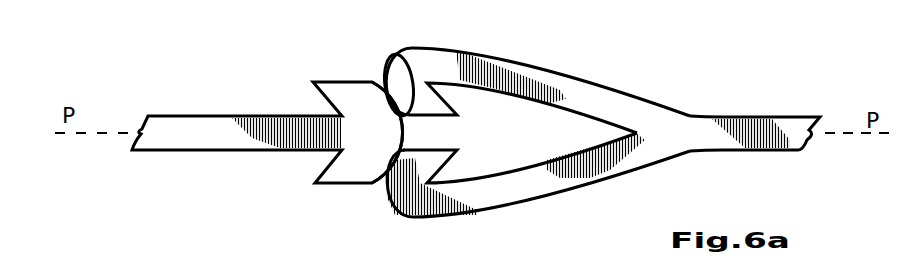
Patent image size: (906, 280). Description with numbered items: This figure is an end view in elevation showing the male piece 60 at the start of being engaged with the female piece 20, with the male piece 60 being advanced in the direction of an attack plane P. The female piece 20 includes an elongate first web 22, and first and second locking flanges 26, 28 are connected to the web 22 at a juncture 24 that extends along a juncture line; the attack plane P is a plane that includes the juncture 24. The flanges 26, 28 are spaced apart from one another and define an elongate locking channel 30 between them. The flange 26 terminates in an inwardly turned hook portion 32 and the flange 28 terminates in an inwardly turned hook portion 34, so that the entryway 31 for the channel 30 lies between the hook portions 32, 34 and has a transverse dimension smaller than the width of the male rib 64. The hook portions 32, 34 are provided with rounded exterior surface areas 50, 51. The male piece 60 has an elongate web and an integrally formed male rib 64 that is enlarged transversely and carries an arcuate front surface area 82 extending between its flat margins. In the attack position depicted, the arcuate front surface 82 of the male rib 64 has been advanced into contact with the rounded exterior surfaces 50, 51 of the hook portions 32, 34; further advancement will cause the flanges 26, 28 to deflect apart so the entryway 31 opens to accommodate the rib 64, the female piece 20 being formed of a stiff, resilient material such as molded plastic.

The female piece 20 is at (681, 58).
The first web 22 is at (750, 117).
The juncture 24 is at (662, 142).
The first locking flange 26 is at (564, 82).
The second locking flange 28 is at (550, 180).
The locking channel 30 is at (472, 160).
The entryway 31 is at (432, 128).
The hook portion 32 is at (418, 58).
The hook portion 34 is at (417, 218).
The rounded exterior surface area 50 is at (395, 57).
The rounded exterior surface area 51 is at (396, 205).
The male piece 60 is at (234, 73).
The male rib 64 is at (355, 167).
The arcuate front surface area 82 is at (380, 80).